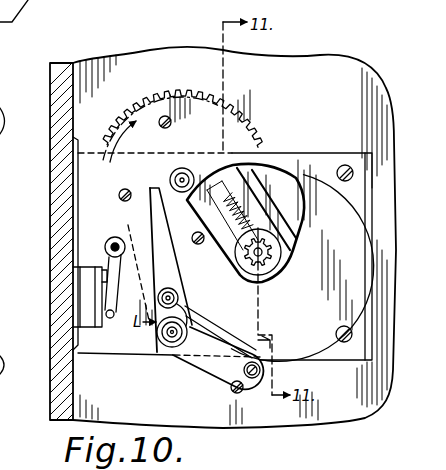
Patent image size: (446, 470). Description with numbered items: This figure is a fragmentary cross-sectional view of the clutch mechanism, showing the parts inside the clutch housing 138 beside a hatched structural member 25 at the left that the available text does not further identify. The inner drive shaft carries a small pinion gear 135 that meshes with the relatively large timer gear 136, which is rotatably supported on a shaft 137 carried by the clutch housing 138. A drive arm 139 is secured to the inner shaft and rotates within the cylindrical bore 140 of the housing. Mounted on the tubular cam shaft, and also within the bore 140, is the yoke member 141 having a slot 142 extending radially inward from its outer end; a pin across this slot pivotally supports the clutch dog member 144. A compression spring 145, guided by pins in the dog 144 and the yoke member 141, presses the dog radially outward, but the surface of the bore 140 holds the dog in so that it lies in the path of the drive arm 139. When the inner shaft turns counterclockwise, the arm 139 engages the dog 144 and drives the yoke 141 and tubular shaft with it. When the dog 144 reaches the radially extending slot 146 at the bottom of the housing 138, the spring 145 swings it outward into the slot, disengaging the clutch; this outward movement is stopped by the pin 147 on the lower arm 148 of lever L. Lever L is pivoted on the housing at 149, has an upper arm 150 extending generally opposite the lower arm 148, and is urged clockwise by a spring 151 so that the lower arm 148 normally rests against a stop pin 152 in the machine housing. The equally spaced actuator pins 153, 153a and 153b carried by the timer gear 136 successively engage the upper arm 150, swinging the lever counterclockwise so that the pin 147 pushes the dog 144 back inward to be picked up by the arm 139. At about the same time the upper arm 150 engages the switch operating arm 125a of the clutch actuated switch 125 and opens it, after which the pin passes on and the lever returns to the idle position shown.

The wall 25 is at (58, 305).
The clutch actuated switch 125 is at (88, 282).
The switch operating arm 125a is at (105, 247).
The pinion gear 135 is at (277, 236).
The timer gear 136 is at (236, 120).
The shaft 137 is at (190, 170).
The clutch housing 138 is at (328, 163).
The drive arm 139 is at (276, 208).
The cylindrical bore 140 is at (328, 228).
The yoke member 141 is at (185, 292).
The slot 142 is at (248, 248).
The clutch dog member 144 is at (251, 147).
The compression spring 145 is at (229, 211).
The radially extending slot 146 is at (263, 347).
The pin 147 is at (262, 372).
The lower arm portion 148 is at (202, 360).
The pivotal support 149 is at (172, 335).
The upper arm 150 is at (154, 286).
The spring 151 is at (185, 318).
The stop pin 152 is at (232, 390).
The actuator pin 153 is at (164, 116).
The actuator pin 153a is at (142, 185).
The actuator pin 153b is at (204, 246).